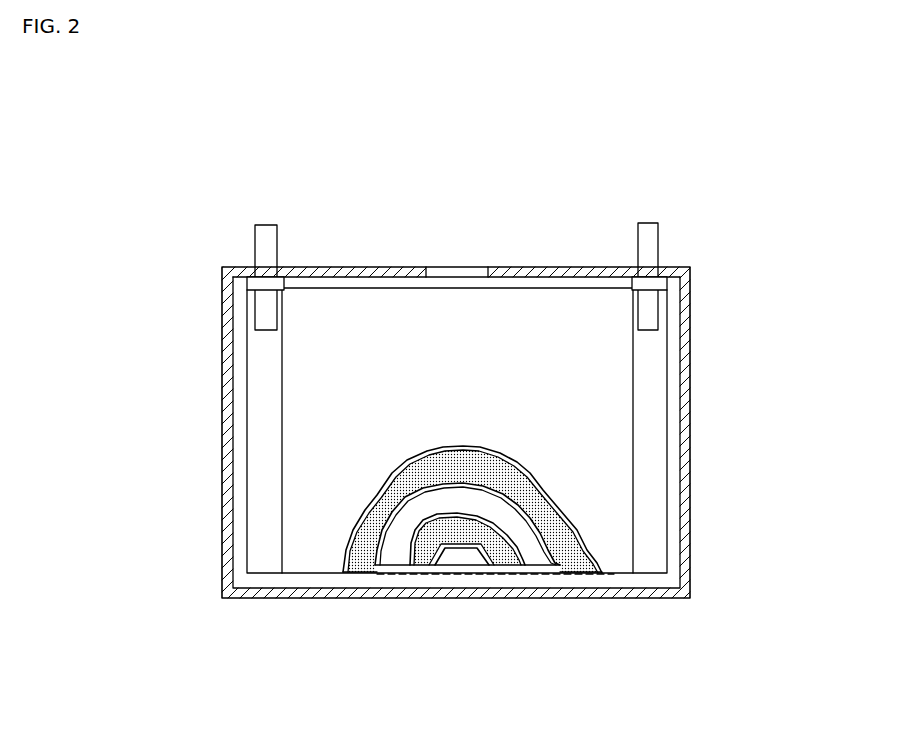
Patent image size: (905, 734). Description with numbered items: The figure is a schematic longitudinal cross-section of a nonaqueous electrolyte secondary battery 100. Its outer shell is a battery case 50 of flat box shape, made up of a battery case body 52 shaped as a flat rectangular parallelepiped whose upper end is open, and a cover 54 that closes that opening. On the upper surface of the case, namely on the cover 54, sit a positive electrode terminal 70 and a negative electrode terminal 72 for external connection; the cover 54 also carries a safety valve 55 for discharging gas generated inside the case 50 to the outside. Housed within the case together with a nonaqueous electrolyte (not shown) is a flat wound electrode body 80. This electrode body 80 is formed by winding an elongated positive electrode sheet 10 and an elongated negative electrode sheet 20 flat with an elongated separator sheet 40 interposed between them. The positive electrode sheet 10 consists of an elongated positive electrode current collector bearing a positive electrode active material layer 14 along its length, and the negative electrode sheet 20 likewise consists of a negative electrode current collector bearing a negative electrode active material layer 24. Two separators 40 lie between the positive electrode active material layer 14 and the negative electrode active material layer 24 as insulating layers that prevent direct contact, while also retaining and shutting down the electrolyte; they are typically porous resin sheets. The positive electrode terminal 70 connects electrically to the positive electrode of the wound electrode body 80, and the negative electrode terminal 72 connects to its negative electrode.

The nonaqueous electrolyte secondary battery 100 is at (690, 162).
The battery case 50 is at (691, 430).
The battery case body 52 is at (685, 551).
The cover 54 is at (571, 268).
The safety valve 55 is at (452, 268).
The positive electrode terminal 70 is at (264, 224).
The negative electrode terminal 72 is at (648, 223).
The positive electrode sheet 10 is at (460, 571).
The positive electrode active material layer 14 is at (360, 555).
The negative electrode sheet 20 is at (467, 604).
The negative electrode active material layer 24 is at (428, 553).
The separator sheet 40 is at (310, 553).
The wound electrode body 80 is at (613, 574).